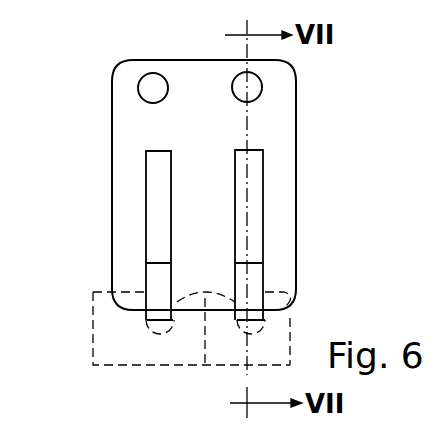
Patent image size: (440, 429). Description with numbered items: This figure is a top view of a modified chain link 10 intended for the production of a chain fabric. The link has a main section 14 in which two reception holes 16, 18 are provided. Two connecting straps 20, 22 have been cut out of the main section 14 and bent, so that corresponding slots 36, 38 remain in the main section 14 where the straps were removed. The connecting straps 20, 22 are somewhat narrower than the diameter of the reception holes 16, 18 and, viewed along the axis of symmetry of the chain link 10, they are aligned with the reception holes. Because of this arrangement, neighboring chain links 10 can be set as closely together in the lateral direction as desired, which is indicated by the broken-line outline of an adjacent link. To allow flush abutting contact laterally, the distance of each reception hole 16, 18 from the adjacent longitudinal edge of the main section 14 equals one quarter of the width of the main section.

The chain link 10 is at (439, 118).
The main section 14 is at (178, 127).
The reception hole 16 is at (140, 88).
The reception hole 18 is at (236, 82).
The connecting strap 20 is at (165, 280).
The connecting strap 22 is at (255, 270).
The slot 36 is at (152, 172).
The slot 38 is at (256, 180).